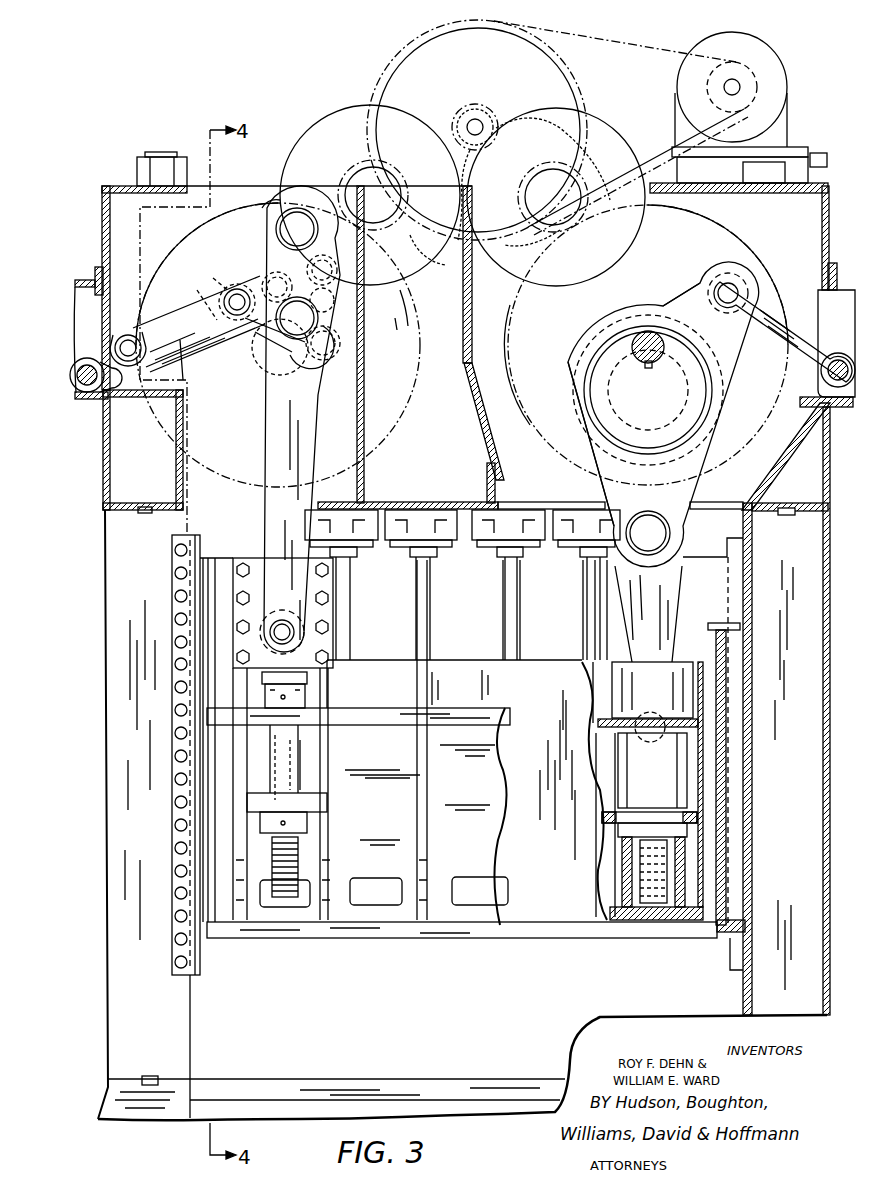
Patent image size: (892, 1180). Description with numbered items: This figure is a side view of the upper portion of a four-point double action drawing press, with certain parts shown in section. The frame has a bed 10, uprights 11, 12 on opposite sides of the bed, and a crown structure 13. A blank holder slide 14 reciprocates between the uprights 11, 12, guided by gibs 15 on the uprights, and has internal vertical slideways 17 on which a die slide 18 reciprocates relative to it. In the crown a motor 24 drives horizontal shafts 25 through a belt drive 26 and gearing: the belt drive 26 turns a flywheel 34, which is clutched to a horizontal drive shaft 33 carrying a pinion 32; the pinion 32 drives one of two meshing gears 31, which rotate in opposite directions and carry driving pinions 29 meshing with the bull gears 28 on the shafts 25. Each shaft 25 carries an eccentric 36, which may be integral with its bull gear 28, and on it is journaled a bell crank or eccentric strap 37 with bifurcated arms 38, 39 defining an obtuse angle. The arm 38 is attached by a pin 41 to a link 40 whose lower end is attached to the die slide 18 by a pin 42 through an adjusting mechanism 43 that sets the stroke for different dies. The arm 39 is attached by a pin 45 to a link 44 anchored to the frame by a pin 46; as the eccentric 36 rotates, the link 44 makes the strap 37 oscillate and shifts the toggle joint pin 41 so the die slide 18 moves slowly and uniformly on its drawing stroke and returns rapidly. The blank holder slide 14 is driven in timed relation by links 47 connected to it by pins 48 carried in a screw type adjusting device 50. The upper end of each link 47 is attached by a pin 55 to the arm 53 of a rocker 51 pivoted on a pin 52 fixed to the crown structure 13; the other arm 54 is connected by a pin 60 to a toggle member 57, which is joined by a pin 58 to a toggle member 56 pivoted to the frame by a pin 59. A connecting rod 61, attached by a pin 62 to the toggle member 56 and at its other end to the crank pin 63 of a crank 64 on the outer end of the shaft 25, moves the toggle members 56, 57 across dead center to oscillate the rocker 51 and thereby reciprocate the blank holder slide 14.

The bed 10 is at (430, 997).
The upright 11 is at (120, 825).
The upright 12 is at (740, 599).
The crown structure 13 is at (466, 512).
The blank holder slide 14 is at (324, 938).
The gibs 15 is at (205, 975).
The vertical slideways 17 is at (708, 644).
The die slide 18 is at (555, 668).
The motor 24 is at (775, 58).
The horizontal shaft 25 is at (298, 372).
The belt drive 26 is at (622, 36).
The bull gear 28 is at (388, 430).
The driving pinion 29 is at (400, 225).
The gear 31 is at (355, 98).
The pinion 32 is at (490, 116).
The horizontal drive shaft 33 is at (456, 118).
The flywheel 34 is at (432, 58).
The eccentric 36 is at (712, 388).
The eccentric strap 37 is at (566, 362).
The arm 38 is at (600, 492).
The arm 39 is at (676, 293).
The link 40 is at (665, 606).
The pin 41 is at (668, 540).
The pin 42 is at (645, 702).
The adjusting mechanism 43 is at (649, 826).
The link 44 is at (770, 302).
The pin 45 is at (728, 282).
The pin 46 is at (822, 378).
The link 47 is at (308, 468).
The pin 48 is at (322, 642).
The screw type adjusting device 50 is at (310, 680).
The rocker 51 is at (270, 236).
The pin 52 is at (275, 218).
The arm 53 is at (330, 310).
The arm 54 is at (335, 260).
The pin 55 is at (332, 350).
The toggle member 56 is at (193, 305).
The toggle member 57 is at (265, 278).
The pin 58 is at (255, 280).
The pin 59 is at (127, 334).
The pin 60 is at (396, 322).
The connecting rod 61 is at (245, 345).
The pin 62 is at (215, 276).
The crank pin 63 is at (316, 368).
The crank 64 is at (256, 360).